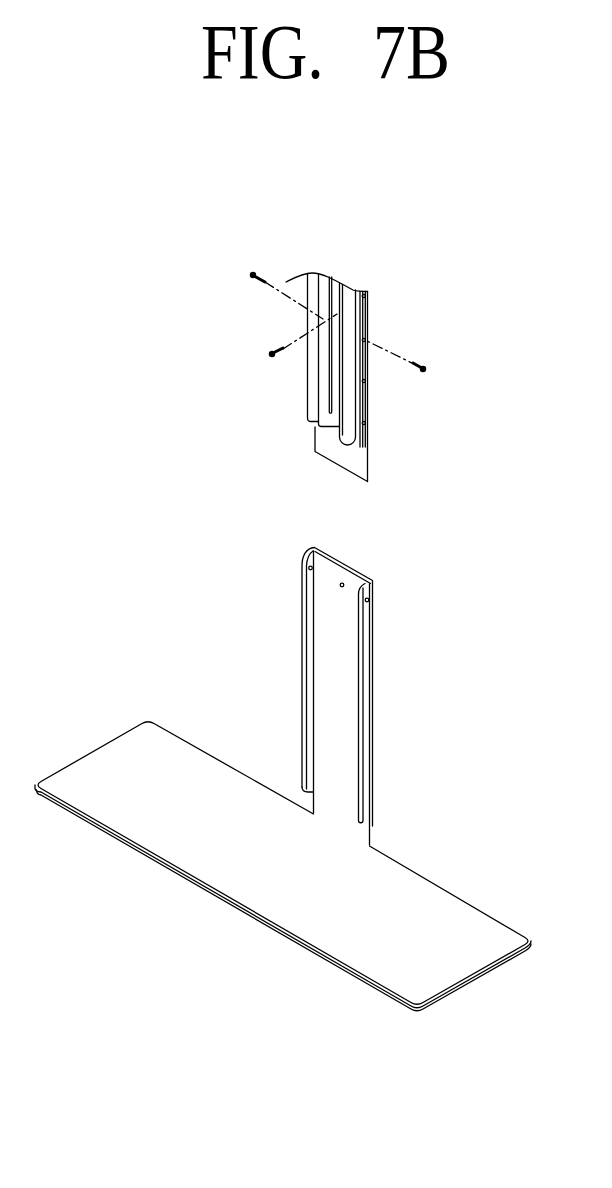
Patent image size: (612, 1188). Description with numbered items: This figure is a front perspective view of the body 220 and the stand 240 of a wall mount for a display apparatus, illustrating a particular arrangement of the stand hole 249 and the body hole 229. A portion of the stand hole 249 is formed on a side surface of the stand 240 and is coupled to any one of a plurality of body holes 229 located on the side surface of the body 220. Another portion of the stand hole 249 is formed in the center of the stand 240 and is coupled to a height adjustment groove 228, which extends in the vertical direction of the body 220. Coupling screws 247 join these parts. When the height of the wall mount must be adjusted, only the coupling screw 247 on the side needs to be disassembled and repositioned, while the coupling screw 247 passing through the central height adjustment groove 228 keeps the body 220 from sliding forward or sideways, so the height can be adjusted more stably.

The body 220 is at (295, 384).
The height adjustment groove 228 is at (333, 389).
The body hole 229 is at (366, 296).
The coupling screw 247 is at (273, 352).
The stand 240 is at (298, 653).
The stand hole 249 is at (344, 584).